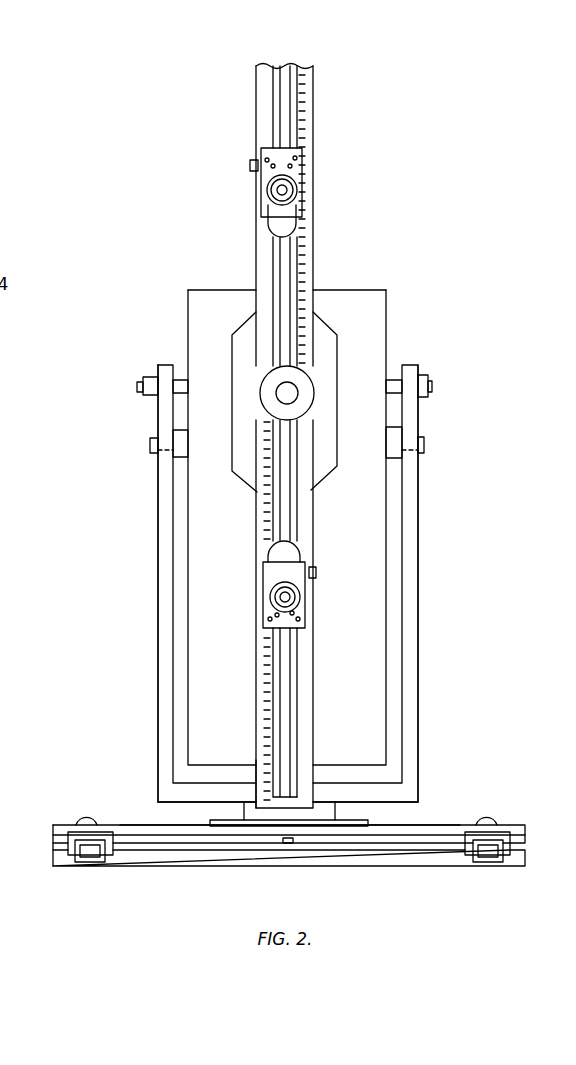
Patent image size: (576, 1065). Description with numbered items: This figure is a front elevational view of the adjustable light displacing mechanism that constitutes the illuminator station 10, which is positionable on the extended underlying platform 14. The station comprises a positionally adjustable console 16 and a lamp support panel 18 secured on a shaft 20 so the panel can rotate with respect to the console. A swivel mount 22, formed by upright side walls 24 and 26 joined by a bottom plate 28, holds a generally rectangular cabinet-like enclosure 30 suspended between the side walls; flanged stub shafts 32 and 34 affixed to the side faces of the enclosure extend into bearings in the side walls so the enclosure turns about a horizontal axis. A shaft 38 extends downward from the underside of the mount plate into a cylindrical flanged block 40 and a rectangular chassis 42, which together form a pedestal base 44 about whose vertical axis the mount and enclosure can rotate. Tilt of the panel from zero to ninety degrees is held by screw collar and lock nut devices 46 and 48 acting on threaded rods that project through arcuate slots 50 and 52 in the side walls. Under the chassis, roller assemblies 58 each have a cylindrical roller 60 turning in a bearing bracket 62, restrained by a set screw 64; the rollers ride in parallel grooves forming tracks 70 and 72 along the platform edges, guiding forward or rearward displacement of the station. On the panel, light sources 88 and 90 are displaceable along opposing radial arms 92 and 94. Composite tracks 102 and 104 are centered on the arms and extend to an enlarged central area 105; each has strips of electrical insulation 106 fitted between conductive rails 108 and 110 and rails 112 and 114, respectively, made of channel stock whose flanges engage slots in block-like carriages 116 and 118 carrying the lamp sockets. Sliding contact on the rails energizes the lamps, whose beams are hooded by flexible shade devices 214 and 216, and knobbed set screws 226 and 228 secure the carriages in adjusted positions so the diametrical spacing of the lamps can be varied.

The illuminator station 10 is at (173, 237).
The platform 14 is at (172, 858).
The console 16 is at (392, 341).
The lamp support panel 18 is at (348, 238).
The shaft 20 is at (277, 391).
The swivel mount 22 is at (156, 545).
The side wall 24 is at (170, 561).
The side wall 26 is at (412, 563).
The bottom plate 28 is at (167, 790).
The enclosure 30 is at (187, 301).
The stub shaft 32 is at (150, 448).
The stub shaft 34 is at (422, 445).
The shaft 38 is at (292, 845).
The cylindrical flanged block 40 is at (245, 810).
The chassis 42 is at (422, 828).
The pedestal base 44 is at (66, 823).
The screw collar and lock nut device 46 is at (145, 383).
The screw collar and lock nut device 48 is at (428, 380).
The arcuate slot 50 is at (163, 432).
The arcuate slot 52 is at (406, 432).
The roller assembly 58 is at (101, 862).
The roller 60 is at (484, 851).
The bearing bracket 62 is at (505, 845).
The set screw 64 is at (487, 820).
The track 70 is at (90, 858).
The track 72 is at (494, 862).
The light source 88 is at (299, 193).
The light source 90 is at (300, 598).
The radial arm 92 is at (255, 85).
The radial arm 94 is at (262, 738).
The composite track 102 is at (298, 86).
The composite track 104 is at (275, 655).
The central area 105 is at (250, 472).
The electrical insulation strip 106 is at (284, 133).
The conductive rail 108 is at (270, 251).
The conductive rail 110 is at (293, 260).
The conductive rail 112 is at (279, 697).
The conductive rail 114 is at (297, 703).
The carriage 116 is at (260, 212).
The carriage 118 is at (263, 613).
The shade device 214 is at (273, 193).
The shade device 216 is at (275, 594).
The knobbed set screw 226 is at (251, 165).
The knobbed set screw 228 is at (314, 572).